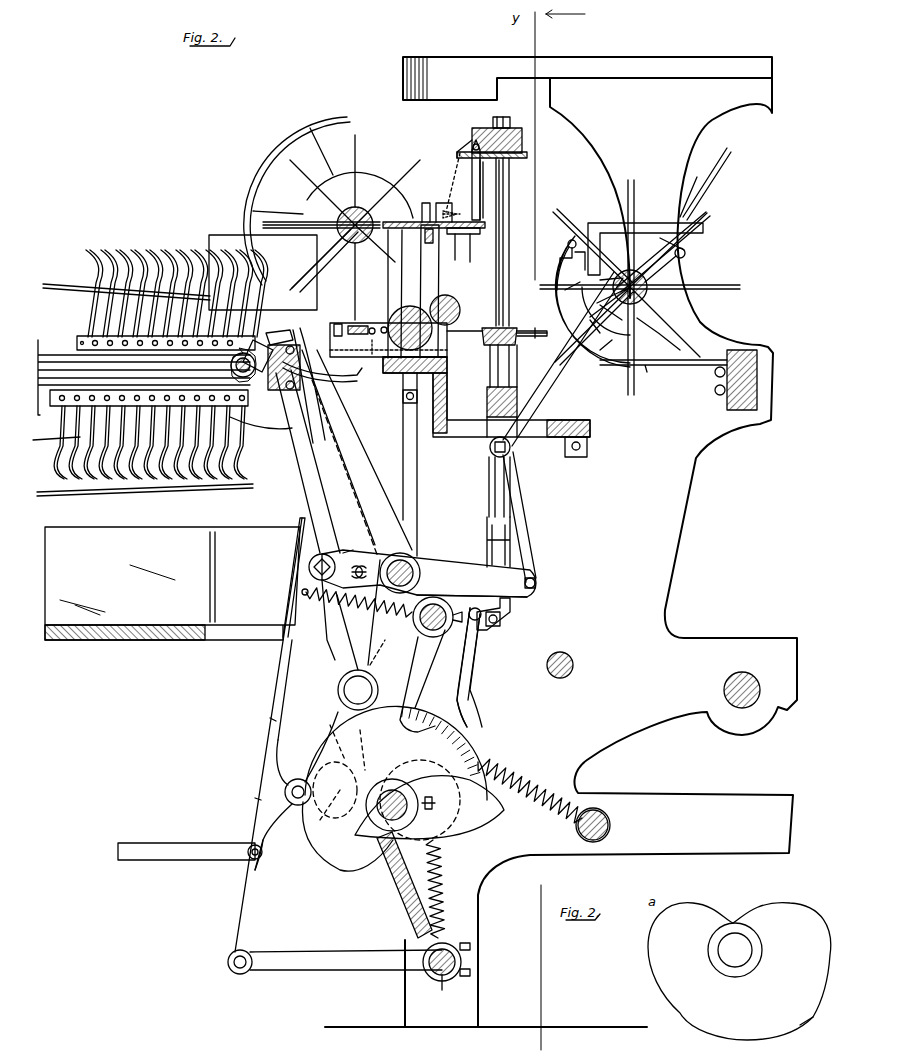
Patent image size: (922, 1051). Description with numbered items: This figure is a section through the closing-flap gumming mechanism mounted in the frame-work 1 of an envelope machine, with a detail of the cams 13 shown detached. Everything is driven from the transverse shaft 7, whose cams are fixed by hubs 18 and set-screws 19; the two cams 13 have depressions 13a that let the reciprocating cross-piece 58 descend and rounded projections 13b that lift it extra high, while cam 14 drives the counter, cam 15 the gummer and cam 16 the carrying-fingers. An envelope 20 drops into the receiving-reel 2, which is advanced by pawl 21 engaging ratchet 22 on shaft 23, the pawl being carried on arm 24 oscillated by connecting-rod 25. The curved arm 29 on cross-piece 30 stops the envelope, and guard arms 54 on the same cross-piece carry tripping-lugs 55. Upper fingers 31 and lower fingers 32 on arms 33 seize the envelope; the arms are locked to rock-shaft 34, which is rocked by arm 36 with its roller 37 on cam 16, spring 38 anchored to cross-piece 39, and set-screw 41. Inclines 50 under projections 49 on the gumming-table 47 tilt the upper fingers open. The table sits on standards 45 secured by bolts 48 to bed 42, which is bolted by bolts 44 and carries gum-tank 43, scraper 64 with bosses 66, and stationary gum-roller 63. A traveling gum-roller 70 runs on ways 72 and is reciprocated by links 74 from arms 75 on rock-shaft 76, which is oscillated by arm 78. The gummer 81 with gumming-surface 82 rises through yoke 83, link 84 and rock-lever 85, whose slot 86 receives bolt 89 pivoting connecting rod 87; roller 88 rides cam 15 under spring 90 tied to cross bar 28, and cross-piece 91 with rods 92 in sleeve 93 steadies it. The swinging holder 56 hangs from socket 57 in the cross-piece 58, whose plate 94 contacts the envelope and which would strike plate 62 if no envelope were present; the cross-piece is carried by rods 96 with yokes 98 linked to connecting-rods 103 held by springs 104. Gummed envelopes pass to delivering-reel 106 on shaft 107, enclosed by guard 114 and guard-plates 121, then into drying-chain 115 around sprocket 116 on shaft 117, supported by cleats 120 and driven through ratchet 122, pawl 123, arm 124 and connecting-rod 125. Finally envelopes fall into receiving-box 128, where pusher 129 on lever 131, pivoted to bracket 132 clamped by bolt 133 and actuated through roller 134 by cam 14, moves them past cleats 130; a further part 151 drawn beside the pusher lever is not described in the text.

In FIG. 2, the frame-work 1 is at (561, 542).
In FIG. 2, the receiving-reel 2 is at (660, 300).
In FIG. 2, the shaft 7 is at (378, 815).
In FIG. 2A, the cams 13 is at (739, 971).
In FIG. 2A, the depressions 13a is at (735, 923).
In FIG. 2A, the rounded projections 13b is at (812, 1022).
In FIG. 2, the cam 14 is at (500, 815).
In FIG. 2, the cam 15 is at (462, 740).
In FIG. 2, the cam 16 is at (375, 860).
In FIG. 2, the hubs 18 is at (418, 790).
In FIG. 2, the set-screws 19 is at (433, 812).
In FIG. 2, the envelope 20 is at (719, 186).
In FIG. 2, the pawl 21 is at (648, 255).
In FIG. 2, the ratchet 22 is at (668, 275).
In FIG. 2, the shaft 23 is at (658, 334).
In FIG. 2, the arm 24 is at (580, 300).
In FIG. 2, the connecting-rod 25 is at (560, 387).
In FIG. 2, the cross bar or brace 28 is at (442, 976).
In FIG. 2, the curved arm 29 is at (663, 373).
In FIG. 2, the cross-piece 30 is at (757, 395).
In FIG. 2, the upper fingers 31 is at (424, 203).
In FIG. 2, the lower fingers 32 is at (433, 236).
In FIG. 2, the arms 33 is at (420, 464).
In FIG. 2, the rock-shaft 34 is at (459, 667).
In FIG. 2, the arm 36 is at (416, 648).
In FIG. 2, the roller 37 is at (333, 797).
In FIG. 2, the spring 38 is at (518, 775).
In FIG. 2, the cross-piece 39 is at (612, 828).
In FIG. 2, the set-screw 41 is at (462, 582).
In FIG. 2, the bed 42 is at (592, 425).
In FIG. 2, the gum-tank 43 is at (375, 341).
In FIG. 2, the bolts 44 is at (588, 466).
In FIG. 2, the standards 45 is at (390, 292).
In FIG. 2, the gumming-table 47 is at (528, 196).
In FIG. 2, the bolts 48 is at (430, 290).
In FIG. 2, the projections 49 is at (440, 200).
In FIG. 2, the inclines 50 is at (454, 208).
In FIG. 2, the arms 54 is at (606, 327).
In FIG. 2, the tripping-lugs 55 is at (568, 243).
In FIG. 2, the swinging holder 56 is at (485, 195).
In FIG. 2, the socket 57 is at (470, 146).
In FIG. 2, the reciprocating cross-piece 58 is at (522, 133).
In FIG. 2, the plate 62 is at (465, 249).
In FIG. 2, the stationary gum-roller 63 is at (393, 313).
In FIG. 2, the scraper 64 is at (352, 324).
In FIG. 2, the bosses 66 is at (351, 338).
In FIG. 2, the traveling gum-roller 70 is at (460, 300).
In FIG. 2, the ways 72 is at (532, 339).
In FIG. 2, the links 74 is at (322, 371).
In FIG. 2, the arms 75 is at (357, 453).
In FIG. 2, the rock-shaft 76 is at (393, 558).
In FIG. 2, the arm 78 is at (415, 640).
In FIG. 2, the gummer 81 is at (490, 360).
In FIG. 2, the gumming-surface 82 is at (492, 328).
In FIG. 2, the yoke 83 is at (513, 452).
In FIG. 2, the link 84 is at (523, 510).
In FIG. 2, the rock-lever 85 is at (432, 556).
In FIG. 2, the slot 86 is at (345, 553).
In FIG. 2, the connecting rod 87 is at (333, 645).
In FIG. 2, the roller 88 is at (338, 692).
In FIG. 2, the bolt 89 is at (308, 565).
In FIG. 2, the spring 90 is at (398, 870).
In FIG. 2, the cross-piece 91 is at (487, 398).
In FIG. 2, the rods 92 is at (488, 523).
In FIG. 2, the sleeve 93 is at (478, 484).
In FIG. 2, the plate 94 is at (527, 155).
In FIG. 2, the rods 96 is at (513, 242).
In FIG. 2, the yokes 98 is at (512, 612).
In FIG. 2, the connecting-rods 103 is at (475, 670).
In FIG. 2, the springs 104 is at (443, 885).
In FIG. 2, the delivering-reel 106 is at (360, 210).
In FIG. 2, the shaft 107 is at (340, 260).
In FIG. 2, the guard 114 is at (262, 180).
In FIG. 2, the drying-chain 115 is at (252, 447).
In FIG. 2, the sprocket 116 is at (280, 398).
In FIG. 2, the shaft 117 is at (238, 352).
In FIG. 2, the cleats 120 is at (45, 408).
In FIG. 2, the guard-plates 121 is at (263, 272).
In FIG. 2, the ratchet 122 is at (258, 338).
In FIG. 2, the pawl 123 is at (284, 320).
In FIG. 2, the arm 124 is at (318, 385).
In FIG. 2, the connecting-rod 125 is at (312, 490).
In FIG. 2, the receiving-box 128 is at (172, 583).
In FIG. 2, the pusher 129 is at (297, 522).
In FIG. 2, the cleats 130 is at (216, 597).
In FIG. 2, the lever 131 is at (270, 722).
In FIG. 2, the bracket 132 is at (253, 948).
In FIG. 2, the bolt 133 is at (495, 970).
In FIG. 2, the roller 134 is at (298, 780).
In FIG. 2, the link 151 is at (165, 846).